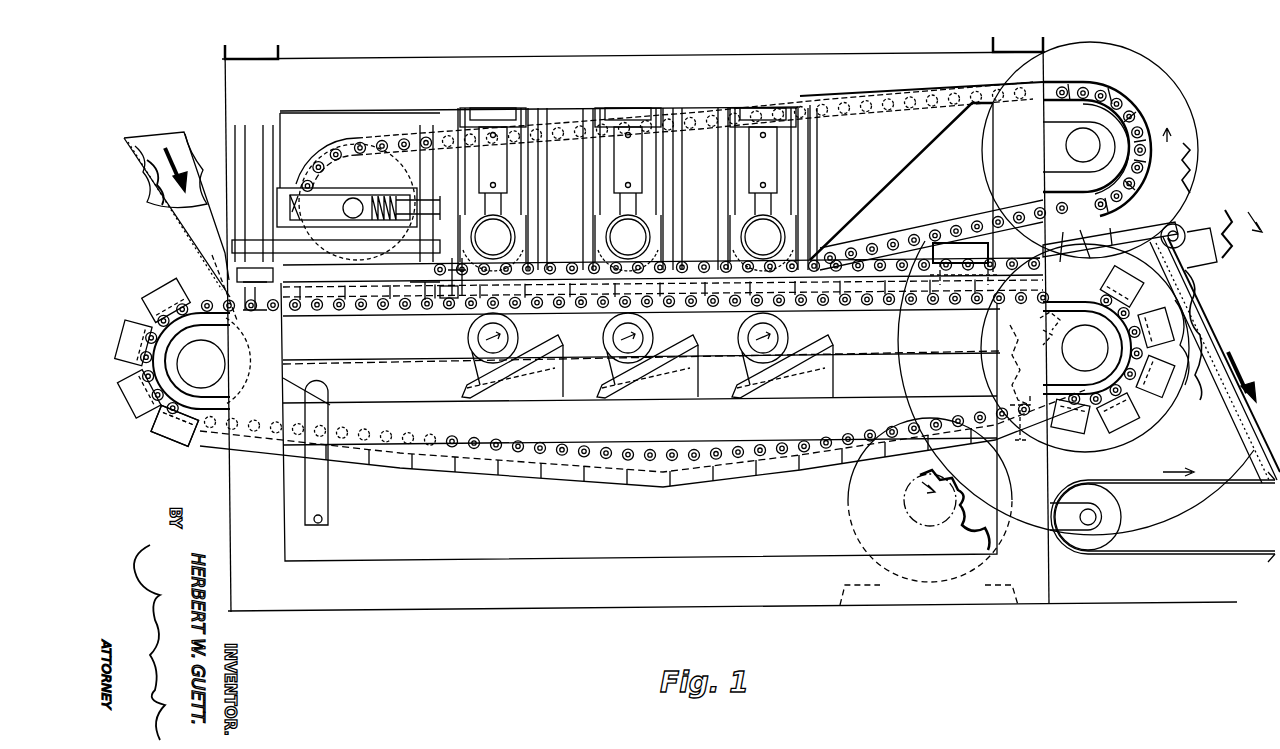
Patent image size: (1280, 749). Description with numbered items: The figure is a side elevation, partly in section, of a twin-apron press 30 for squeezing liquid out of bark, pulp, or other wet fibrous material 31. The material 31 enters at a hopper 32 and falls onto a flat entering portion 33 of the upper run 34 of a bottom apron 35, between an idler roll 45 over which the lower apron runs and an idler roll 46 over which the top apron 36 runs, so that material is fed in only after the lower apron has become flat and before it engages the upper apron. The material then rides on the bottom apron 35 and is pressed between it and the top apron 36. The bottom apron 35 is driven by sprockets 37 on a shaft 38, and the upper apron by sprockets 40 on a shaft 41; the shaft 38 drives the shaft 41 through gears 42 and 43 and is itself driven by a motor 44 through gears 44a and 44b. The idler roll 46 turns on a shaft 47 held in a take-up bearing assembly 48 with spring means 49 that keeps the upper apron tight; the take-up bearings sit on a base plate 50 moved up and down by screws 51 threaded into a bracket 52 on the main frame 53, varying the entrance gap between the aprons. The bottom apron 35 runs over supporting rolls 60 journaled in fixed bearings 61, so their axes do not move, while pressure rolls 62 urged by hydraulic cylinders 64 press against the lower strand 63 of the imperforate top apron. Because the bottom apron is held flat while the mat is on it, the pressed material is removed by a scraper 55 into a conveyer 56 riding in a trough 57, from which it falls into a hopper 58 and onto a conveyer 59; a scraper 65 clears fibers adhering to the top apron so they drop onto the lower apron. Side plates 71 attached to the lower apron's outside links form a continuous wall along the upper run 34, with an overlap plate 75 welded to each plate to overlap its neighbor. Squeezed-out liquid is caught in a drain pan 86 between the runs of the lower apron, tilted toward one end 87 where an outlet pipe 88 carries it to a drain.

The twin-apron press 30 is at (403, 50).
The wet fibrous material 31 is at (148, 130).
The hopper 32 is at (172, 218).
The flat entering portion 33 is at (220, 262).
The upper run 34 is at (345, 312).
The bottom apron 35 is at (158, 447).
The top apron 36 is at (905, 238).
The sprockets 37 is at (1020, 382).
The shaft 38 is at (1087, 348).
The sprockets 40 is at (1107, 149).
The shaft 41 is at (1083, 145).
The gear 42 is at (1193, 335).
The gear 43 is at (1200, 142).
The motor 44 is at (858, 530).
The gear 44a is at (910, 486).
The gear 44b is at (1230, 205).
The idler roll 45 is at (158, 360).
The idler roll 46 is at (362, 152).
The shaft 47 is at (353, 198).
The take-up bearing assembly 48 is at (338, 202).
The spring means 49 is at (392, 196).
The base plate 50 is at (415, 244).
The screws 51 is at (249, 313).
The bracket 52 is at (276, 274).
The main frame 53 is at (578, 57).
The scraper 55 is at (1033, 310).
The conveyer 56 is at (1122, 250).
The trough 57 is at (1085, 244).
The hopper 58 is at (1240, 378).
The conveyer 59 is at (1258, 485).
The supporting rolls 60 is at (528, 330).
The fixed bearings 61 is at (478, 337).
The pressure rolls 62 is at (628, 237).
The lower strand 63 is at (680, 262).
The hydraulic cylinders 64 is at (618, 189).
The scraper 65 is at (965, 264).
The side plates 71 is at (152, 298).
The overlap plate 75 is at (862, 305).
The drain pan 86 is at (412, 372).
The end 87 is at (312, 372).
The outlet pipe 88 is at (329, 497).